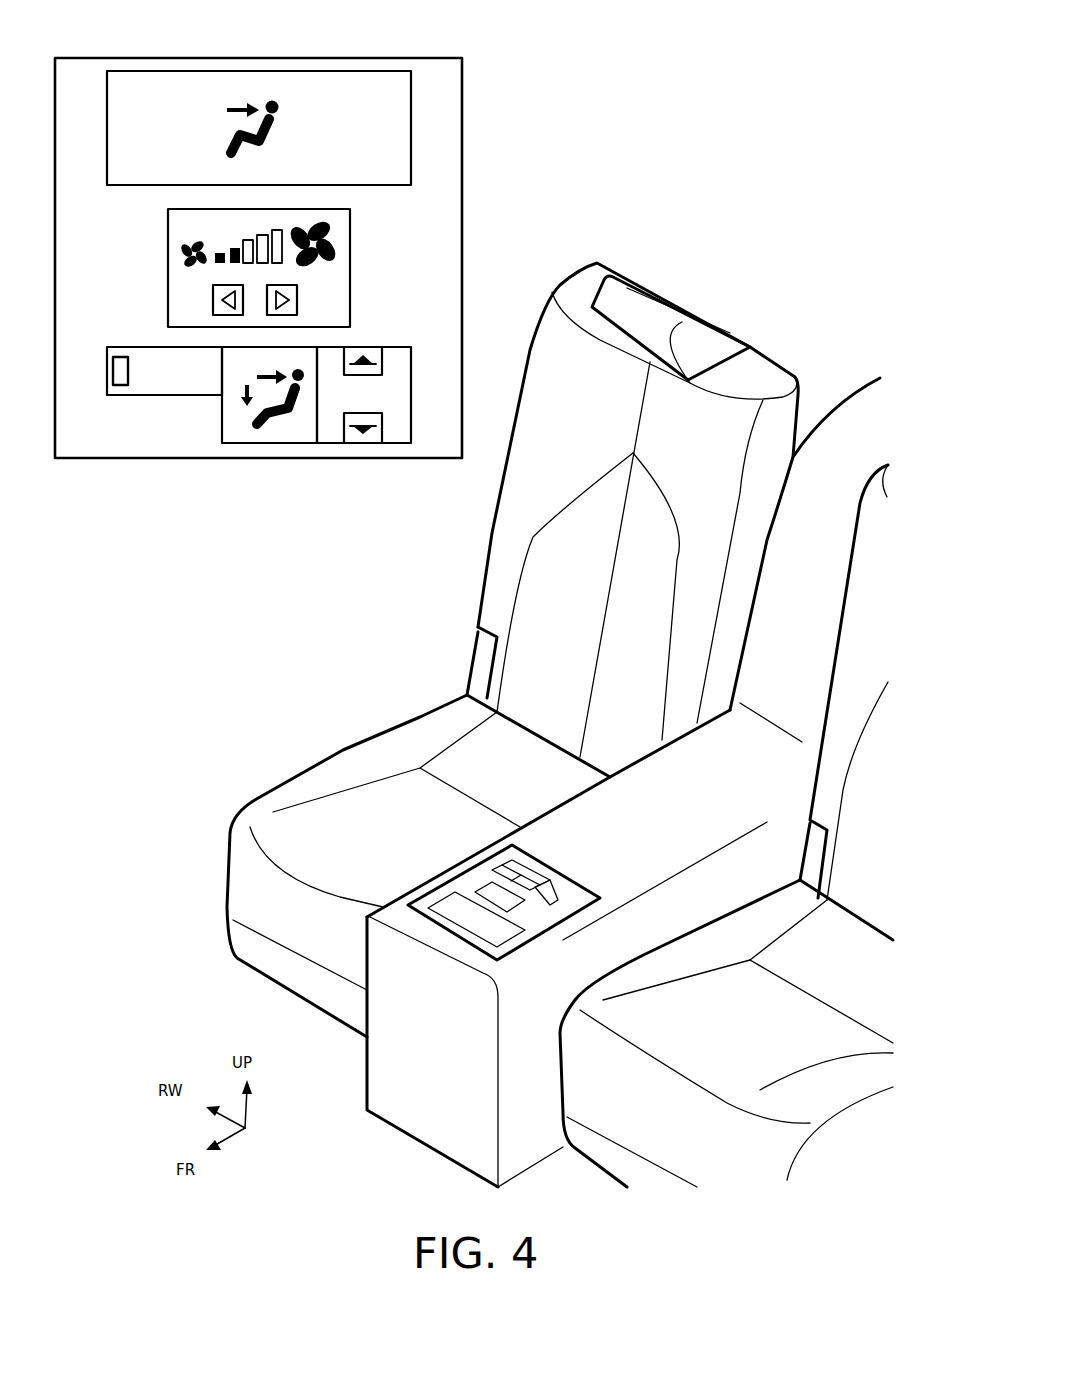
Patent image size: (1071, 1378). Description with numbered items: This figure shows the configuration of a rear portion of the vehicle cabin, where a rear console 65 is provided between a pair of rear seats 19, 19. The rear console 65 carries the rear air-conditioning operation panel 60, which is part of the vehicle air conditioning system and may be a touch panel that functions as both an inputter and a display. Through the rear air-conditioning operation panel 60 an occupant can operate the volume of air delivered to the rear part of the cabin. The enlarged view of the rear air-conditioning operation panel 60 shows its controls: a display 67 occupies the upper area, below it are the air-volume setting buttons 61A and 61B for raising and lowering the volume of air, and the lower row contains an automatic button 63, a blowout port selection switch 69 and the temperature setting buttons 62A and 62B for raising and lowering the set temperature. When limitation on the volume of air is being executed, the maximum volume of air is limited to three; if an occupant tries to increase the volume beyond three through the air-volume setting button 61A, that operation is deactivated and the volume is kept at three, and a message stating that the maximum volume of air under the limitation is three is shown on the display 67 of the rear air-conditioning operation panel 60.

The rear seat 19 is at (757, 373).
The rear air-conditioning operation panel 60 is at (443, 907).
The air-volume setting button 61A is at (297, 300).
The air-volume setting button 61B is at (213, 300).
The temperature setting button 62A is at (373, 347).
The temperature setting button 62B is at (375, 435).
The automatic button 63 is at (158, 385).
The rear console 65 is at (593, 827).
The display 67 is at (375, 88).
The blowout port selection switch 69 is at (242, 435).